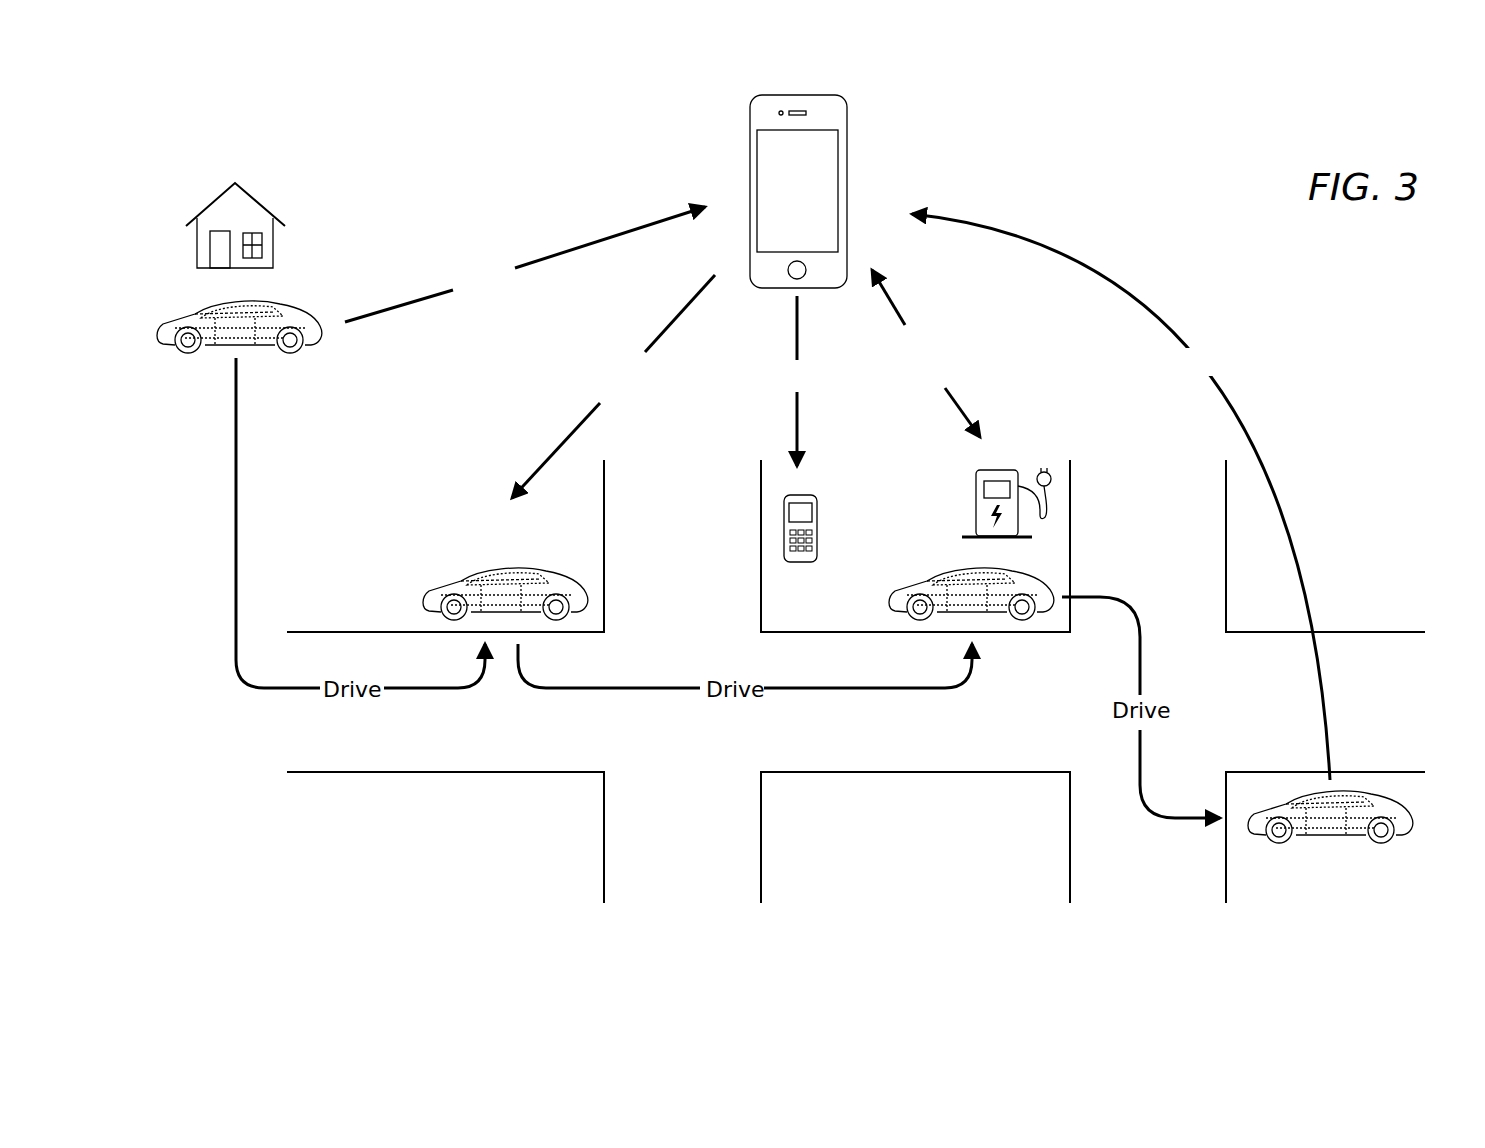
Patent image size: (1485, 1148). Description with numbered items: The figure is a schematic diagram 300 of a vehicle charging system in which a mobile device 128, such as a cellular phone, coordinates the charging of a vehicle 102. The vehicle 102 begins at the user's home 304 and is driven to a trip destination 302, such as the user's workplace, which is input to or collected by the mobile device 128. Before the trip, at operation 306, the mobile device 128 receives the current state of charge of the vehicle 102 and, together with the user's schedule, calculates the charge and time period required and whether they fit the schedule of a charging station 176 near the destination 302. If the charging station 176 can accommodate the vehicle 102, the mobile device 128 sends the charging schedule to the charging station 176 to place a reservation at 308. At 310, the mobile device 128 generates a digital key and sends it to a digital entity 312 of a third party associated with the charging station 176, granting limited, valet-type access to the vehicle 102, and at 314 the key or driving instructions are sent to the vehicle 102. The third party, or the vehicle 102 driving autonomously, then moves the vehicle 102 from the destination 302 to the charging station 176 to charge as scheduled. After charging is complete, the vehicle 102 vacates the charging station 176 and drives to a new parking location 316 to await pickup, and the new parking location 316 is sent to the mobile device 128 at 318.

The vehicle 102 is at (190, 306).
The mobile device 128 is at (848, 143).
The charging station 176 is at (975, 492).
The schematic diagram 300 is at (1371, 281).
The trip destination 302 is at (358, 590).
The home 304 is at (258, 205).
The operation of receiving current SOC 306 is at (598, 240).
The reservation placement 308 is at (897, 306).
The digital key generation and sending 310 is at (800, 407).
The digital entity 312 is at (818, 516).
The key sending to vehicle 314 is at (665, 332).
The new parking location 316 is at (1378, 866).
The sending of new parking location 318 is at (1115, 275).